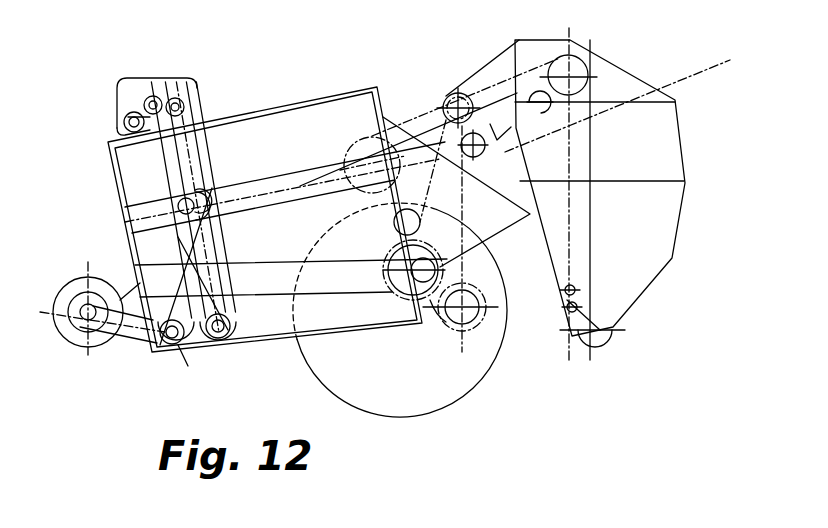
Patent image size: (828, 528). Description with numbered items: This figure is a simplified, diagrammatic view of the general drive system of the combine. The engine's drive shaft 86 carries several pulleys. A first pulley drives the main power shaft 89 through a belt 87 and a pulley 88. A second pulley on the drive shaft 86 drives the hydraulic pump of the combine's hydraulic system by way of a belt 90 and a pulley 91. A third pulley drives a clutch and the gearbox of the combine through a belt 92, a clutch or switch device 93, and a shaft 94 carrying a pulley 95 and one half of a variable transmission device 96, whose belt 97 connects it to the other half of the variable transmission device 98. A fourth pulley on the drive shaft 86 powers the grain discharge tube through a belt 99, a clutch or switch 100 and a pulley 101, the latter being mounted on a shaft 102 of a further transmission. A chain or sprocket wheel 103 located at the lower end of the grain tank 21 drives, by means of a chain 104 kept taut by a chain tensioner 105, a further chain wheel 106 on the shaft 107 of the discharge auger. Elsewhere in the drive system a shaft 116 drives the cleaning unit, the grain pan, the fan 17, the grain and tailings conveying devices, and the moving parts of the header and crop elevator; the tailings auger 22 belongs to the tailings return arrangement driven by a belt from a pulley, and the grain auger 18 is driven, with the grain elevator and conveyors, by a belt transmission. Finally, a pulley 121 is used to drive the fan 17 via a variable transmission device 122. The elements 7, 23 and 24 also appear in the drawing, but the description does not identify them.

The drum 7 is at (468, 388).
The fan 17 is at (98, 340).
The grain auger 18 is at (168, 345).
The grain tank 21 is at (672, 125).
The tailings auger 22 is at (226, 340).
The arm 23 is at (225, 238).
The pulley bracket 24 is at (120, 125).
The drive shaft 86 is at (462, 98).
The belt 87 is at (408, 121).
The pulley 88 is at (360, 155).
The main power shaft 89 is at (335, 200).
The belt 90 is at (503, 138).
The pulley 91 is at (485, 153).
The belt 92 is at (462, 212).
The clutch or switch device 93 is at (394, 226).
The shaft 94 is at (390, 292).
The pulley 95 is at (428, 242).
The variable transmission device 96 is at (440, 258).
The belt 97 is at (432, 328).
The variable transmission device 98 is at (465, 330).
The belt 99 is at (503, 68).
The clutch or switch 100 is at (552, 108).
The pulley 101 is at (577, 63).
The shaft 102 is at (568, 213).
The chain or sprocket wheel 103 is at (575, 290).
The chain 104 is at (580, 305).
The chain tensioner 105 is at (572, 317).
The chain wheel 106 is at (590, 338).
The shaft 107 is at (592, 218).
The shaft 116 is at (188, 213).
The pulley 121 is at (213, 197).
The variable transmission device 122 is at (197, 362).